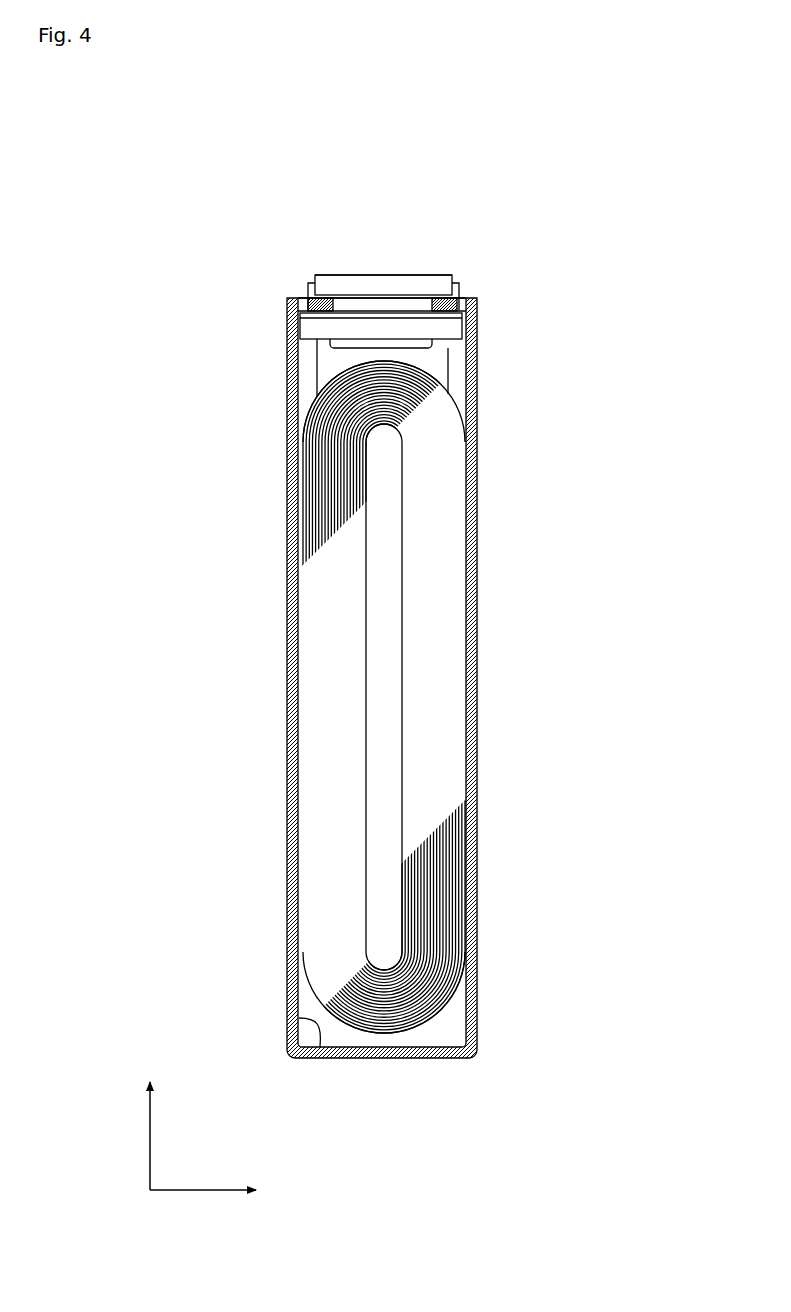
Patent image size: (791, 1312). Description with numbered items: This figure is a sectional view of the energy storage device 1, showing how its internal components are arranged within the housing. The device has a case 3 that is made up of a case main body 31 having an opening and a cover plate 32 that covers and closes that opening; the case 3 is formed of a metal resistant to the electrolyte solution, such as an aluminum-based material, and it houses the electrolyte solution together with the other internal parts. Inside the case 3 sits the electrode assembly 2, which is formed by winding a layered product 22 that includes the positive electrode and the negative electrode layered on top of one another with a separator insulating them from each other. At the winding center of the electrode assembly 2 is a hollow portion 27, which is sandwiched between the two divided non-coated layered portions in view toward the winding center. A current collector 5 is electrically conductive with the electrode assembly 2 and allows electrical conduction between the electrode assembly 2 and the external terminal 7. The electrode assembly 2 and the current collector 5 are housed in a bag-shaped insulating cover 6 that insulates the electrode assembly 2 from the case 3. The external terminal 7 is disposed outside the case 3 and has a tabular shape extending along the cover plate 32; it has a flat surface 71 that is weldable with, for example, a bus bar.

The energy storage device 1 is at (521, 170).
The electrode assembly 2 is at (424, 370).
The layered product 22 is at (460, 402).
The hollow portion 27 is at (385, 712).
The case 3 is at (150, 287).
The case main body 31 is at (290, 352).
The cover plate 32 is at (291, 298).
The current collector 5 is at (316, 375).
The insulating cover 6 is at (316, 1048).
The external terminal 7 is at (370, 275).
The surface 71 is at (397, 275).